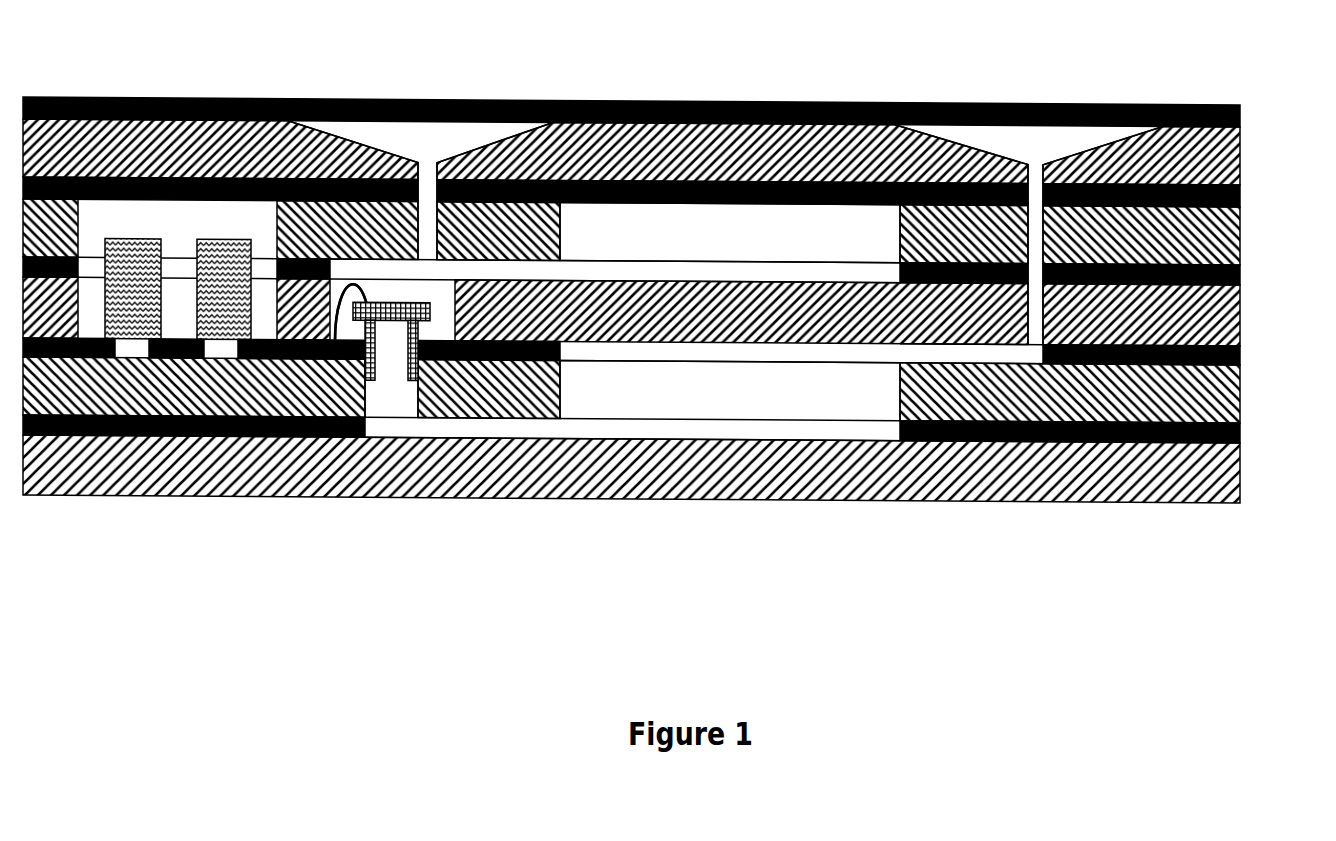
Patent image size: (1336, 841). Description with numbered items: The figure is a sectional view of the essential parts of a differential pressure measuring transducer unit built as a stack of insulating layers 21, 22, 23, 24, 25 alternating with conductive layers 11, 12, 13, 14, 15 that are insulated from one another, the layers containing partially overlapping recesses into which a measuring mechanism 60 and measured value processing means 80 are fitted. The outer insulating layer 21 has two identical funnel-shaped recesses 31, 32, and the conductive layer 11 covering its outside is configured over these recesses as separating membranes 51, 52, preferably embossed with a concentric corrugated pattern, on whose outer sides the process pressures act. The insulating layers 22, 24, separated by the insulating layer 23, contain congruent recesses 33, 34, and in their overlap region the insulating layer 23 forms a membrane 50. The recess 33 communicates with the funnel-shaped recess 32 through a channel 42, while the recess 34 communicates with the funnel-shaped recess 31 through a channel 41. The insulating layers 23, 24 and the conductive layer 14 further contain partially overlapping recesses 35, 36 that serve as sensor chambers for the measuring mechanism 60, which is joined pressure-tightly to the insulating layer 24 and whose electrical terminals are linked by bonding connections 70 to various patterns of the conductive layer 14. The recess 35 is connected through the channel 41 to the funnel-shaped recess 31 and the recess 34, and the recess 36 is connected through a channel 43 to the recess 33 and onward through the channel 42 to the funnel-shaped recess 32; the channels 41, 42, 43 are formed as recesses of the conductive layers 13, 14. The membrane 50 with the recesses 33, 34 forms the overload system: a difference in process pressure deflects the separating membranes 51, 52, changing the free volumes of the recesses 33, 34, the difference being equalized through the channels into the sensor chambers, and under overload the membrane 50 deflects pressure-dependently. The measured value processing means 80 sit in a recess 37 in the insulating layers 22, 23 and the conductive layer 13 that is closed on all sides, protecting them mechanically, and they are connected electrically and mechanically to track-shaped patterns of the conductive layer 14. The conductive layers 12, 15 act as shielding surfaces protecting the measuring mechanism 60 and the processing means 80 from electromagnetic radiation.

The conductive layer 11 is at (1242, 97).
The conductive layer 12 is at (1242, 177).
The conductive layer 13 is at (1242, 257).
The conductive layer 14 is at (1242, 337).
The conductive layer 15 is at (1242, 417).
The insulating layer 21 is at (1242, 137).
The insulating layer 22 is at (1242, 219).
The insulating layer 23 is at (1242, 297).
The insulating layer 24 is at (1242, 377).
The insulating layer 25 is at (1242, 457).
The funnel-shaped recess 31 is at (417, 139).
The funnel-shaped recess 32 is at (1042, 140).
The recess 33 is at (632, 396).
The recess 34 is at (808, 238).
The recess 35 is at (345, 315).
The recess 36 is at (402, 394).
The recess 37 is at (168, 296).
The channel 41 is at (587, 149).
The channel 42 is at (952, 346).
The channel 43 is at (473, 424).
The membrane 50 is at (668, 314).
The separating membrane 51 is at (413, 97).
The separating membrane 52 is at (983, 99).
The measuring mechanism 60 is at (377, 316).
The bonding connection 70 is at (347, 281).
The measured value processing means 80 is at (222, 296).